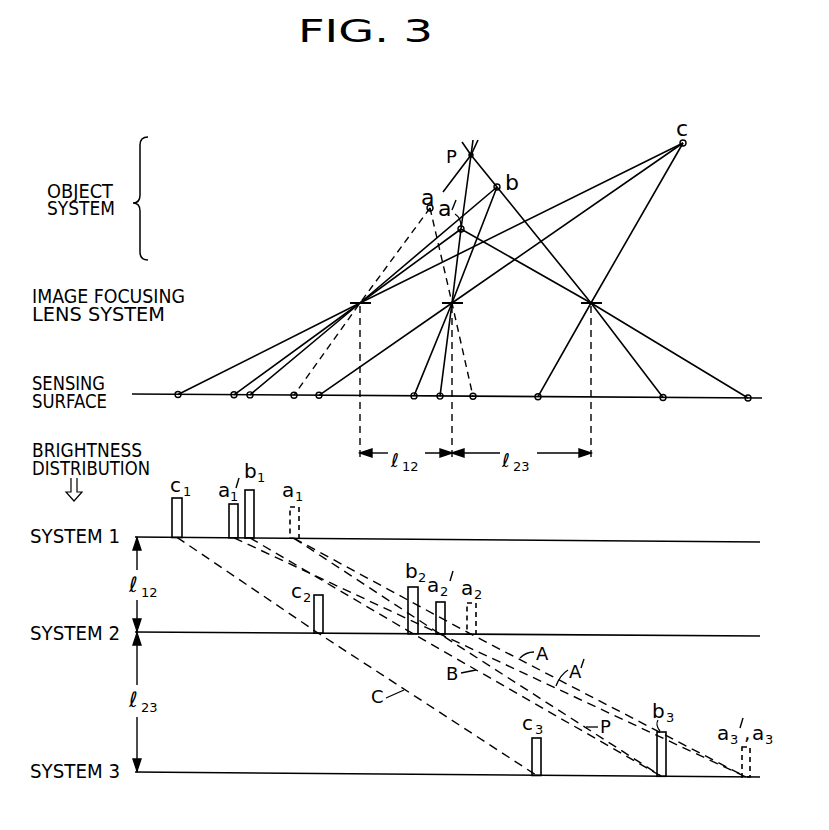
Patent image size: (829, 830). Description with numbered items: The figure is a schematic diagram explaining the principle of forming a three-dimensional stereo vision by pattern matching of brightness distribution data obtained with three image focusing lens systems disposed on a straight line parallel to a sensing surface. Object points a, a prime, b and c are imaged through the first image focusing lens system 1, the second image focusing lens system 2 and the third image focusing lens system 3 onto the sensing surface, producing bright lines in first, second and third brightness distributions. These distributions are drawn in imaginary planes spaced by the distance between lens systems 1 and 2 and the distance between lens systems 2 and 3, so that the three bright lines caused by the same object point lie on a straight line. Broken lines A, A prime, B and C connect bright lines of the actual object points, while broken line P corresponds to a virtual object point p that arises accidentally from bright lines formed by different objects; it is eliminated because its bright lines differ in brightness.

The first image focusing lens system 1 is at (353, 304).
The second image focusing lens system 2 is at (461, 306).
The third image focusing lens system 3 is at (601, 306).